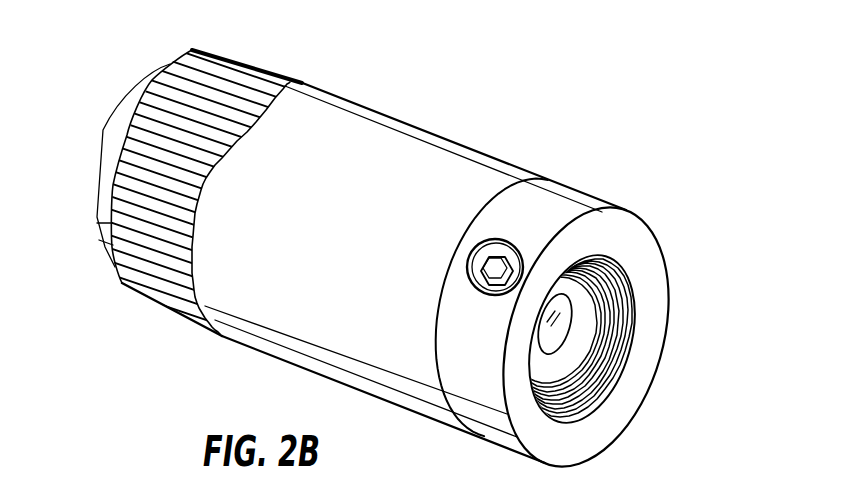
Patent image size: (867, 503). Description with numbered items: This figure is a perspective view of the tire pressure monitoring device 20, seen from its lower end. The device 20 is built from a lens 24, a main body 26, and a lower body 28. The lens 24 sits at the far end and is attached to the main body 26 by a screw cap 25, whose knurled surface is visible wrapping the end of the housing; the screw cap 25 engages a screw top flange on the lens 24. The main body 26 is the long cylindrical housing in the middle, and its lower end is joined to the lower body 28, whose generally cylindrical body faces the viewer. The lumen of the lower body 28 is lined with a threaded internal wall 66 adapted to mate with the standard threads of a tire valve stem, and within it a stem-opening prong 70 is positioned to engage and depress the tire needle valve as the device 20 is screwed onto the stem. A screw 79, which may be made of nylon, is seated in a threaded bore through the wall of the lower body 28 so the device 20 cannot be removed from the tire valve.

The tire pressure monitoring device 20 is at (521, 97).
The lens 24 is at (151, 83).
The screw cap 25 is at (228, 73).
The main body 26 is at (352, 127).
The lower body 28 is at (630, 196).
The threaded internal wall 66 is at (618, 343).
The stem-opening prong 70 is at (560, 328).
The screw 79 is at (488, 260).